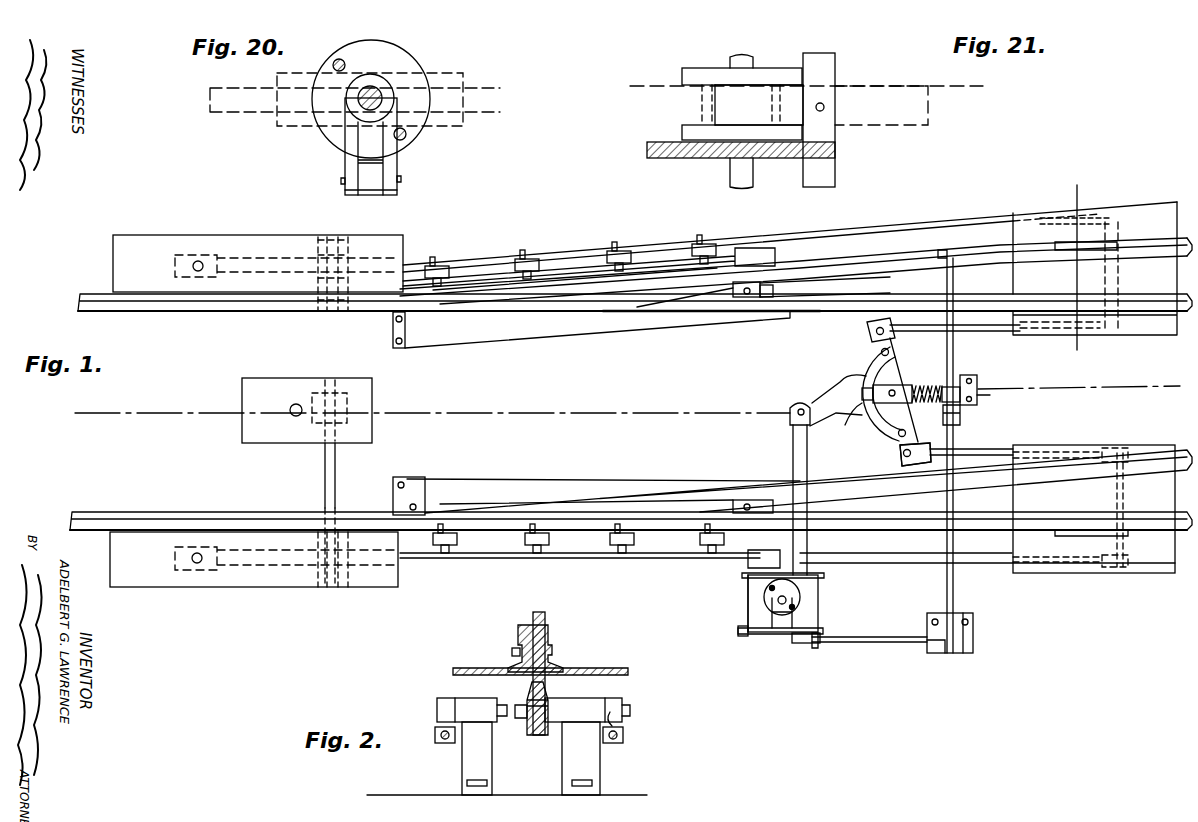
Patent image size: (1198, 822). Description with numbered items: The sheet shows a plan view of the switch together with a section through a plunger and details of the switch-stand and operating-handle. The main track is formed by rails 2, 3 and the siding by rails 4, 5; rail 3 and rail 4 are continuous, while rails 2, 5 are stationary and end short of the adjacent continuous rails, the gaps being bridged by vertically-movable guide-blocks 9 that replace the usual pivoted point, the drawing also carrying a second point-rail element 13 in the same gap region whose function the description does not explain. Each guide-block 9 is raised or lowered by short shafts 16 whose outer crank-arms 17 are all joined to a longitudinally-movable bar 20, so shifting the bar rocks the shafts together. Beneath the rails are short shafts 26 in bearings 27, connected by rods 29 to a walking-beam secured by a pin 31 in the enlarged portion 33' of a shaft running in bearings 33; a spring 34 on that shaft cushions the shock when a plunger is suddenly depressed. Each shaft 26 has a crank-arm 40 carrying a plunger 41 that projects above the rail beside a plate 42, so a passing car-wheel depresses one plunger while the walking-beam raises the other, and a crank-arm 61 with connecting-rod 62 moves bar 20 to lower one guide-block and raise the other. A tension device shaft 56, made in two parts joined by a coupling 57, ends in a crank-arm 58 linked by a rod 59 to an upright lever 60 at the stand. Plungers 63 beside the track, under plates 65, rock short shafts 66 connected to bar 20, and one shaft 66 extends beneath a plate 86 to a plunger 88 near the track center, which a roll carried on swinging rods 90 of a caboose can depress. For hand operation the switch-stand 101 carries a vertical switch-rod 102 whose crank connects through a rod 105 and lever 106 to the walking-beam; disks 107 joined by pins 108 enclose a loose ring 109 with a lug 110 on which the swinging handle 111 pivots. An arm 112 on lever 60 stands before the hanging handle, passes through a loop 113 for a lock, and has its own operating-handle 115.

In FIG. 1, the main-track rail 2 is at (770, 340).
In FIG. 1, the main-track rail 3 is at (1003, 525).
In FIG. 1, the siding rail 4 is at (857, 256).
In FIG. 1, the siding rail 5 is at (1148, 458).
In FIG. 1, the guide-block 9 is at (585, 300).
In FIG. 1, the switch point rail 13 is at (484, 333).
In FIG. 1, the short shaft 16 is at (446, 281).
In FIG. 1, the crank-arm 17 is at (438, 266).
In FIG. 1, the bar 20 is at (460, 272).
In FIG. 1, the short shaft 26 is at (1120, 272).
In FIG. 2, the short shaft 26 is at (630, 710).
In FIG. 2, the bearing 27 is at (466, 768).
In FIG. 1, the rod 29 is at (1003, 332).
In FIG. 2, the rod 29 is at (440, 737).
In FIG. 1, the pin 31 is at (888, 391).
In FIG. 1, the bearing 33 is at (918, 407).
In FIG. 1, the enlarged portion 33' is at (895, 377).
In FIG. 1, the spring 34 is at (939, 406).
In FIG. 2, the crank-arm 40 is at (530, 736).
In FIG. 1, the plunger 41 is at (1078, 258).
In FIG. 2, the plunger 41 is at (545, 620).
In FIG. 1, the plate 42 is at (1072, 248).
In FIG. 2, the plate 42 is at (556, 640).
In FIG. 1, the shaft 56 is at (953, 345).
In FIG. 1, the coupling 57 is at (962, 416).
In FIG. 1, the crank-arm 58 is at (962, 650).
In FIG. 1, the rod 59 is at (868, 645).
In FIG. 1, the lever 60 is at (790, 645).
In FIG. 2, the crank-arm 61 is at (622, 723).
In FIG. 1, the connecting-rod 62 is at (880, 231).
In FIG. 2, the connecting-rod 62 is at (623, 740).
In FIG. 1, the plunger 63 is at (201, 262).
In FIG. 1, the plate 65 is at (139, 248).
In FIG. 1, the short shaft 66 is at (335, 474).
In FIG. 1, the plate 86 is at (242, 437).
In FIG. 1, the plunger 88 is at (296, 404).
In FIG. 1, the swinging rod 90 is at (898, 458).
In FIG. 21, the switch-stand 101 is at (660, 158).
In FIG. 1, the switch-stand 101 is at (752, 590).
In FIG. 20, the switch-rod 102 is at (360, 98).
In FIG. 21, the switch-rod 102 is at (750, 58).
In FIG. 1, the switch-rod 102 is at (780, 602).
In FIG. 1, the rod 105 is at (793, 451).
In FIG. 1, the lever 106 is at (842, 386).
In FIG. 20, the disk 107 is at (383, 56).
In FIG. 21, the disk 107 is at (695, 68).
In FIG. 1, the disk 107 is at (795, 592).
In FIG. 20, the pin 108 is at (340, 60).
In FIG. 21, the pin 108 is at (705, 102).
In FIG. 1, the pin 108 is at (775, 590).
In FIG. 20, the loose ring 109 is at (388, 88).
In FIG. 21, the loose ring 109 is at (759, 105).
In FIG. 20, the lug 110 is at (352, 164).
In FIG. 21, the lug 110 is at (835, 106).
In FIG. 1, the lug 110 is at (787, 613).
In FIG. 20, the swinging handle 111 is at (368, 188).
In FIG. 21, the swinging handle 111 is at (826, 65).
In FIG. 1, the swinging handle 111 is at (775, 634).
In FIG. 1, the arm 112 is at (762, 636).
In FIG. 1, the loop or staple 113 is at (740, 634).
In FIG. 1, the operating-handle 115 is at (815, 650).